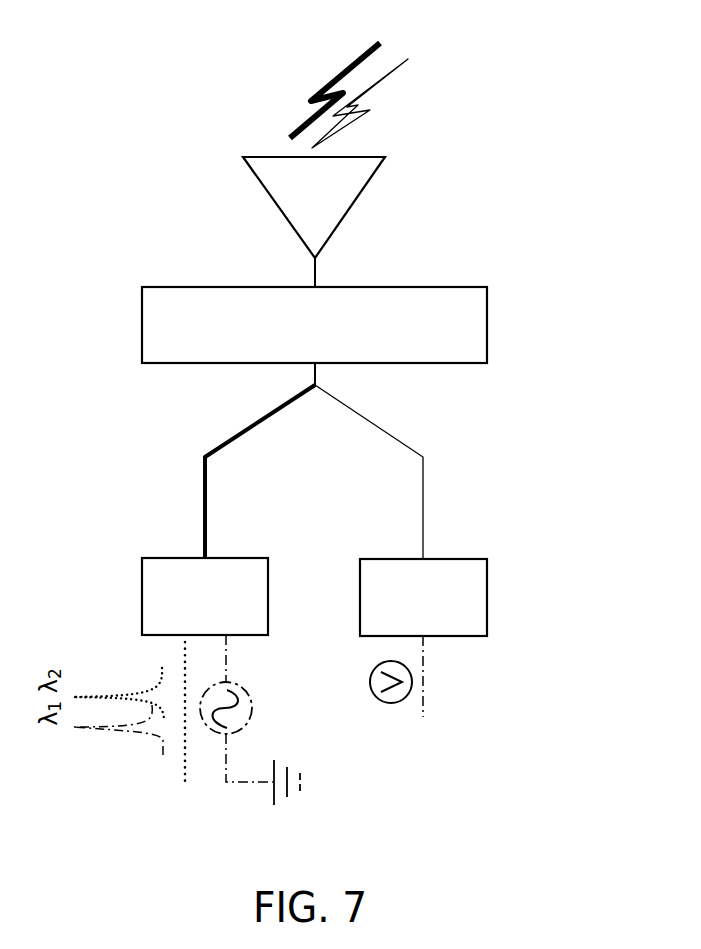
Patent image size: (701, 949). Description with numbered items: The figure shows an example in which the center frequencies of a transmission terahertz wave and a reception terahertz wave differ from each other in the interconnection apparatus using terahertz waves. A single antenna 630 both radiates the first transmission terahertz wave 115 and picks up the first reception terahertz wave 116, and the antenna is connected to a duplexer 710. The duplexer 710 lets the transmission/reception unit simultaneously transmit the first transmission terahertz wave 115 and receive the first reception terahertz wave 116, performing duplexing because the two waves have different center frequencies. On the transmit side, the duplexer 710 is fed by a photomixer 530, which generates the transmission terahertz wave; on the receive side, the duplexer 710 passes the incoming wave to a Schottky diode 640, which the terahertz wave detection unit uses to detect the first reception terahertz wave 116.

The first transmission terahertz wave 115 is at (300, 95).
The first reception terahertz wave 116 is at (405, 89).
The antenna 630 is at (250, 192).
The duplexer 710 is at (487, 323).
The photomixer 530 is at (142, 595).
The Schottky diode 640 is at (487, 598).